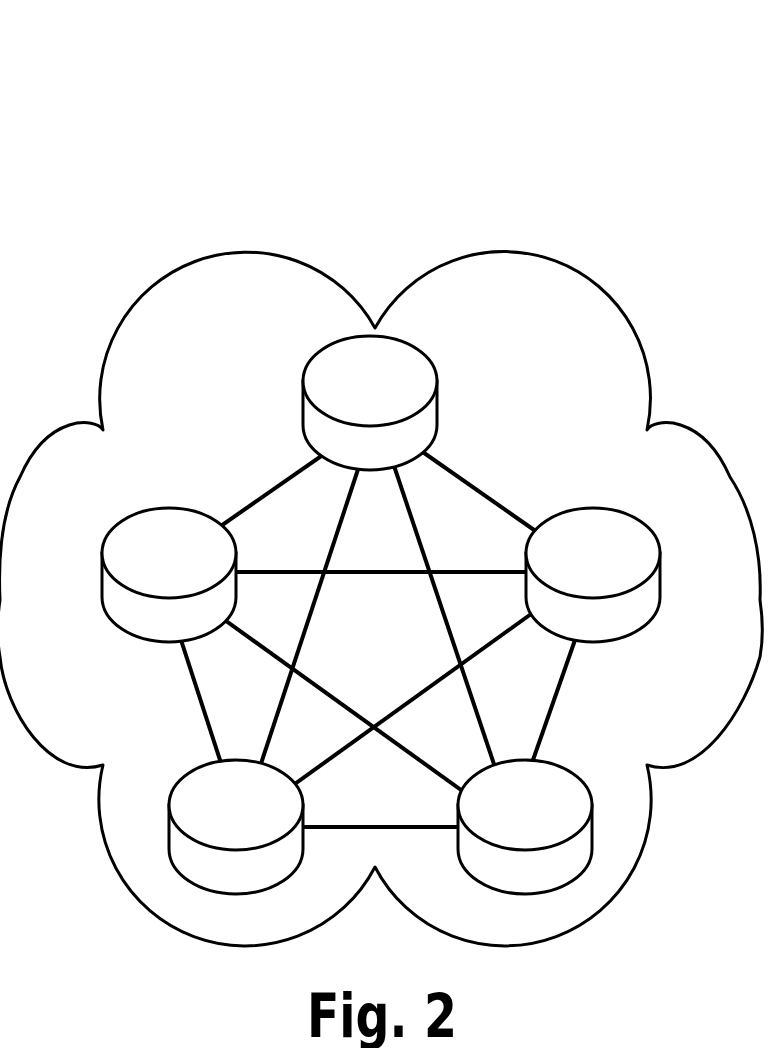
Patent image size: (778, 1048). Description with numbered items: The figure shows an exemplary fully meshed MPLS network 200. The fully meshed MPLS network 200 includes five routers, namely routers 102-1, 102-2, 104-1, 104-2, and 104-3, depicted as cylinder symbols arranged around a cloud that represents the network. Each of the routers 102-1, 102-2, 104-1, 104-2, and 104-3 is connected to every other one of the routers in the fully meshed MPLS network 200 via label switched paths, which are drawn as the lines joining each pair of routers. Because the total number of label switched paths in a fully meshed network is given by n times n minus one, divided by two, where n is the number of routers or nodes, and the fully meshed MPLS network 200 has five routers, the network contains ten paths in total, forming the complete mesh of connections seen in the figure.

The fully meshed MPLS network 200 is at (374, 134).
The router 102-1 is at (336, 397).
The router 102-2 is at (135, 569).
The router 104-1 is at (202, 821).
The router 104-2 is at (491, 821).
The router 104-3 is at (559, 569).